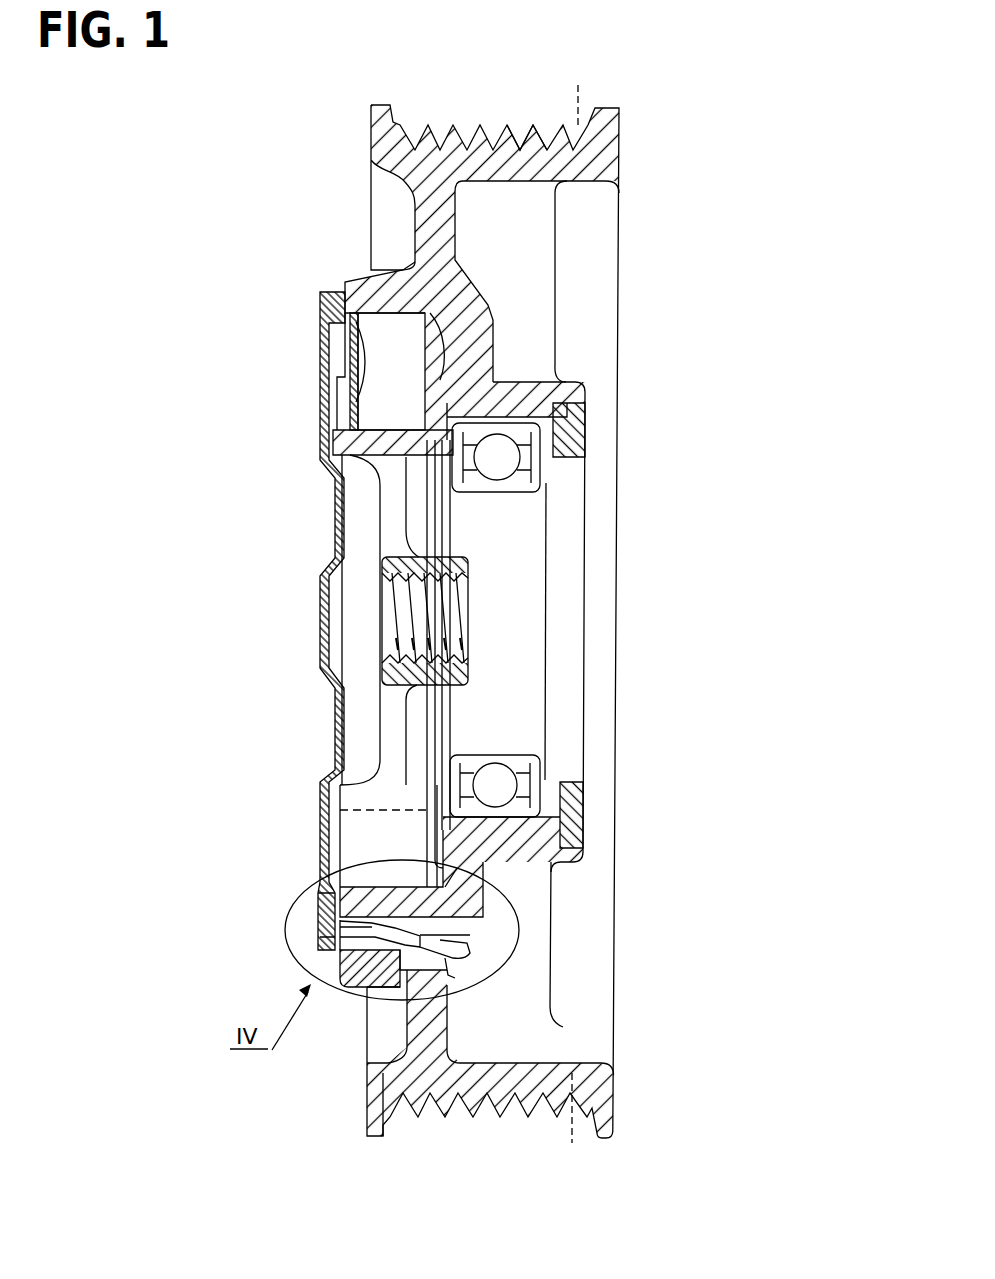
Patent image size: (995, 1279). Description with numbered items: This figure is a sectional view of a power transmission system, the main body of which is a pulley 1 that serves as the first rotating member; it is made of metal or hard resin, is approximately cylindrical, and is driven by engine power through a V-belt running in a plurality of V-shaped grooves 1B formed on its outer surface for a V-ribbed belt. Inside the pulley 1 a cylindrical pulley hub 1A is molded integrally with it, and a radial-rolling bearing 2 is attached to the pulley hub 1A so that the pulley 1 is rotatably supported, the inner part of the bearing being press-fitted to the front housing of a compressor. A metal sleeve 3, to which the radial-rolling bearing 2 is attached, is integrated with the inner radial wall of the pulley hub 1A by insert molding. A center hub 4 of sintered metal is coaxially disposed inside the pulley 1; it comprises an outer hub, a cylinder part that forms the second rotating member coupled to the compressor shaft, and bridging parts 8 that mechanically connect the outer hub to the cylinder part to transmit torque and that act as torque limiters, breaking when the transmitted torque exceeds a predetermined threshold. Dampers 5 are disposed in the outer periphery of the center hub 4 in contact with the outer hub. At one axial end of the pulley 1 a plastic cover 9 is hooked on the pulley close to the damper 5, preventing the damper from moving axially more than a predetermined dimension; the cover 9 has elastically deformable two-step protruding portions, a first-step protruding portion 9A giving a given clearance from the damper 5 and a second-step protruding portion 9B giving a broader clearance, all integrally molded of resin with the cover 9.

The pulley 1 is at (620, 132).
The pulley hub 1A is at (560, 392).
The V-shaped grooves 1B is at (513, 135).
The radial-rolling bearing 2 is at (540, 472).
The metal sleeve 3 is at (583, 410).
The center hub 4 is at (468, 553).
The damper 5 is at (375, 340).
The bridging parts 8 is at (393, 517).
The plastic cover 9 is at (322, 577).
The first-step protruding portion 9A is at (400, 975).
The second-step protruding portion 9B is at (445, 970).